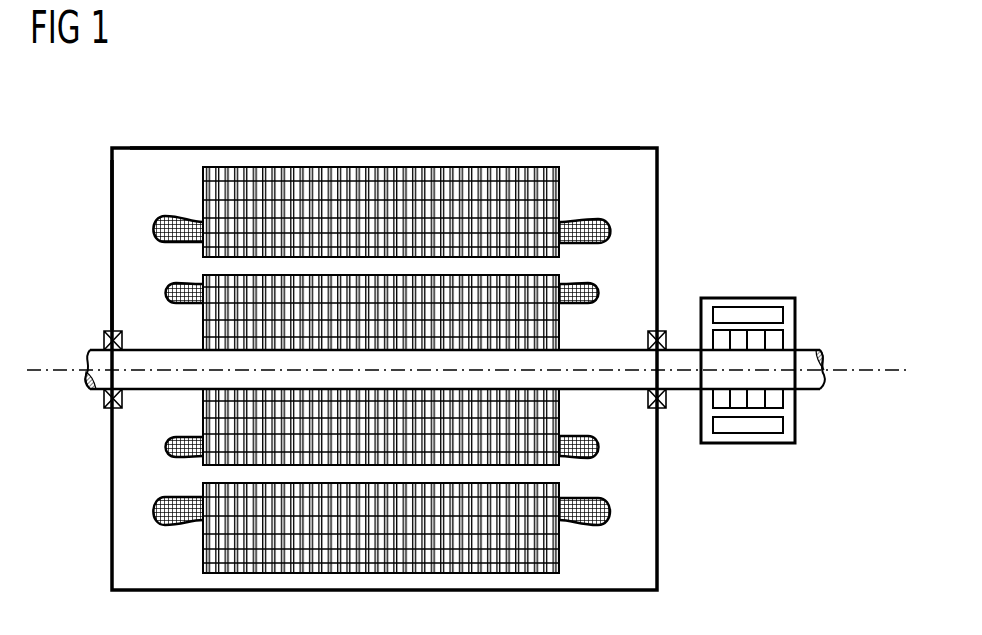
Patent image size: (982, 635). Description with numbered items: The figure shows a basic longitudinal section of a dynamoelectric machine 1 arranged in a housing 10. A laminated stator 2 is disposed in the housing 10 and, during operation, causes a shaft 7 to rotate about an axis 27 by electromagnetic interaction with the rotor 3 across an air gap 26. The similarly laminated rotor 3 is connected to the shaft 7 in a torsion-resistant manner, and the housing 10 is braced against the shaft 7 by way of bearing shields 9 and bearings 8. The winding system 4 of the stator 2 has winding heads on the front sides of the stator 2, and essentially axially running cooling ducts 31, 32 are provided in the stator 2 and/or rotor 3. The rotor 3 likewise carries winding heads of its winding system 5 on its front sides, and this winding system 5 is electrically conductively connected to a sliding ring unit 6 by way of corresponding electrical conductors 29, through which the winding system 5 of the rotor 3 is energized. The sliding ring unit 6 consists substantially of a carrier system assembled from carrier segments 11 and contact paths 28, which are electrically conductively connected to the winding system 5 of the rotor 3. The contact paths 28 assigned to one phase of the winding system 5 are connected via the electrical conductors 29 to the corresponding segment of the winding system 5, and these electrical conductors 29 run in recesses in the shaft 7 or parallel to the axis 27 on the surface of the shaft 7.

The dynamoelectric machine 1 is at (660, 118).
The laminated stator 2 is at (263, 160).
The rotor 3 is at (553, 456).
The winding system of the stator 4 is at (575, 233).
The winding system of the rotor 5 is at (175, 447).
The sliding ring unit 6 is at (780, 325).
The shaft 7 is at (683, 390).
The bearings 8 is at (665, 329).
The bearing shields 9 is at (112, 215).
The housing 10 is at (385, 148).
The carrier segments 11 is at (775, 315).
The air gap 26 is at (210, 266).
The axis 27 is at (895, 371).
The contact paths 28 is at (775, 340).
The electrical conductors 29 is at (608, 347).
The cooling duct 31 is at (552, 546).
The cooling duct 32 is at (545, 404).